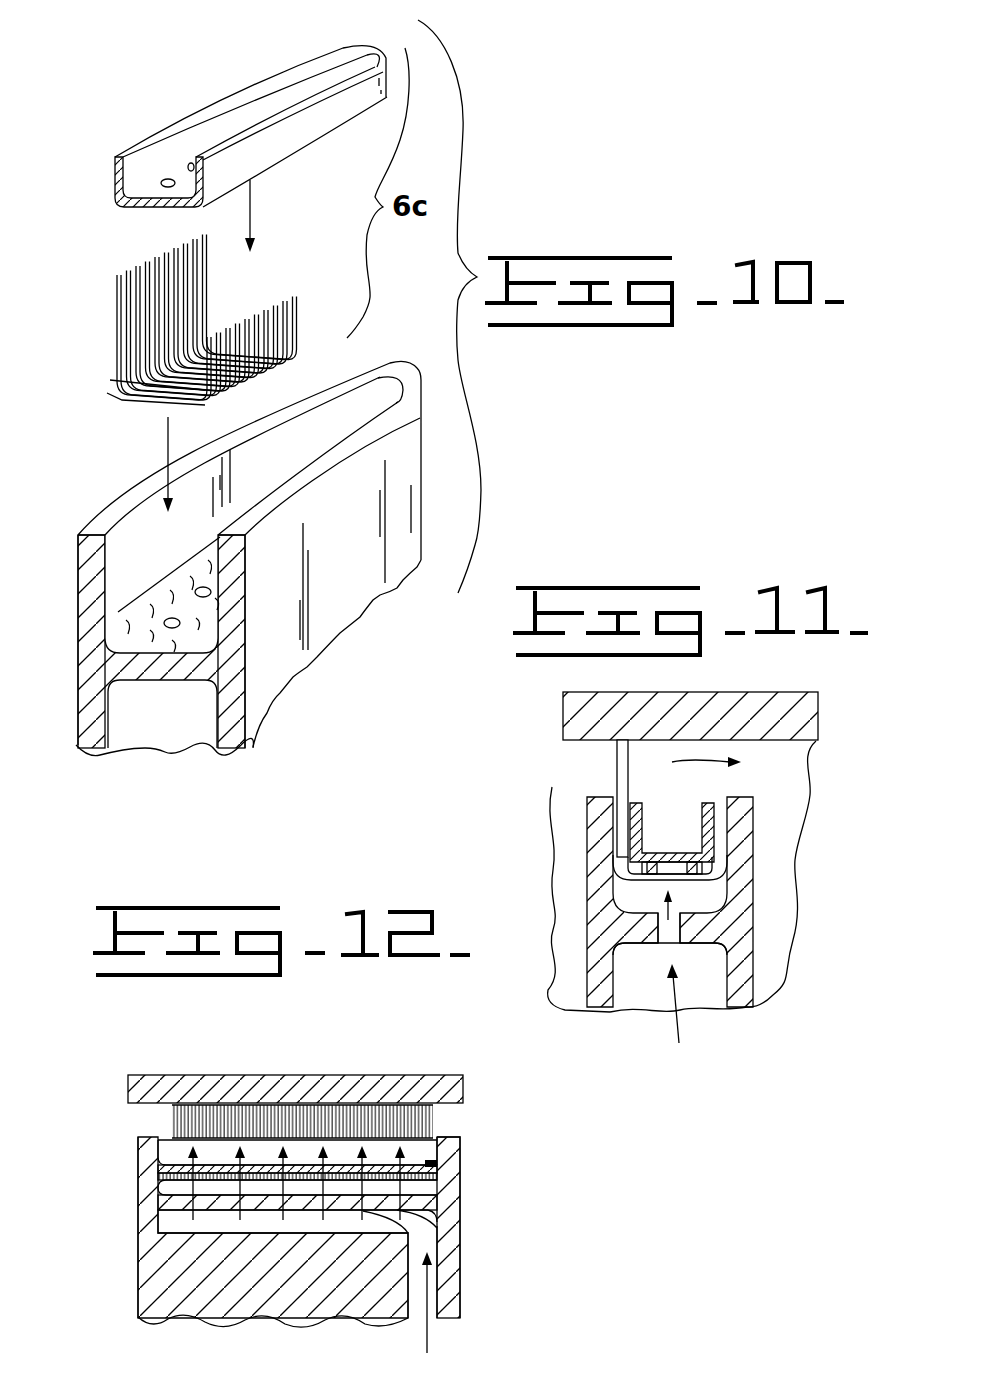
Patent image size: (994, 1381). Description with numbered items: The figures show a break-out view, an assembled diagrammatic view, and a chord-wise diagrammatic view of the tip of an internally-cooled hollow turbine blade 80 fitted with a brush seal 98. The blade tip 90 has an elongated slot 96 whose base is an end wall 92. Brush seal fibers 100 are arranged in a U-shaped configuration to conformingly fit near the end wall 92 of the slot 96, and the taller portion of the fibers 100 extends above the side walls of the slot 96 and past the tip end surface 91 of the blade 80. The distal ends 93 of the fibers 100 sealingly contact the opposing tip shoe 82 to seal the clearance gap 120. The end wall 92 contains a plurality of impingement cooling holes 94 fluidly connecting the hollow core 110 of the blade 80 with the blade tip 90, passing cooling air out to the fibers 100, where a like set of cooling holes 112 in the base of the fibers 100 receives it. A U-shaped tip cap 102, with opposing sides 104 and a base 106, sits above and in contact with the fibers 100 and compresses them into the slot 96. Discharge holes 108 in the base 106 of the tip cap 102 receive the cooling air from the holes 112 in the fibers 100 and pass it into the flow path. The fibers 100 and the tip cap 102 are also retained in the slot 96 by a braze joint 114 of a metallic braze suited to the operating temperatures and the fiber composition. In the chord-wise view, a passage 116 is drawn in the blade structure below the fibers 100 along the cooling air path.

In FIG. 10, the hollow turbine blade 80 is at (440, 543).
In FIG. 11, the hollow turbine blade 80 is at (585, 993).
In FIG. 11, the tip shoe 82 is at (812, 796).
In FIG. 12, the tip shoe 82 is at (463, 1113).
In FIG. 10, the blade tip 90 is at (350, 480).
In FIG. 11, the blade tip 90 is at (587, 823).
In FIG. 12, the blade tip 90 is at (442, 1128).
In FIG. 10, the tip end surface 91 is at (410, 370).
In FIG. 10, the end wall 92 is at (163, 667).
In FIG. 11, the end wall 92 is at (700, 925).
In FIG. 10, the distal ends 93 is at (238, 240).
In FIG. 10, the impingement cooling holes 94 is at (182, 626).
In FIG. 11, the impingement cooling holes 94 is at (692, 963).
In FIG. 12, the impingement cooling holes 94 is at (432, 1223).
In FIG. 10, the elongated slot 96 is at (123, 538).
In FIG. 10, the brush seal 98 is at (102, 332).
In FIG. 12, the brush seal 98 is at (286, 1128).
In FIG. 10, the brush seal fibers 100 is at (112, 333).
In FIG. 11, the brush seal fibers 100 is at (613, 742).
In FIG. 10, the tip cap 102 is at (275, 52).
In FIG. 11, the tip cap 102 is at (653, 812).
In FIG. 10, the opposing sides 104 is at (203, 123).
In FIG. 10, the base 106 is at (122, 212).
In FIG. 10, the discharge holes 108 is at (193, 162).
In FIG. 11, the discharge holes 108 is at (682, 836).
In FIG. 10, the hollow core 110 is at (140, 733).
In FIG. 11, the hollow core 110 is at (645, 990).
In FIG. 12, the hollow core 110 is at (183, 1225).
In FIG. 10, the cooling holes 112 is at (173, 385).
In FIG. 11, the cooling holes 112 is at (656, 890).
In FIG. 11, the braze joint 114 is at (723, 863).
In FIG. 11, the orifice 116 is at (664, 897).
In FIG. 11, the clearance gap 120 is at (618, 741).
In FIG. 12, the clearance gap 120 is at (125, 1105).